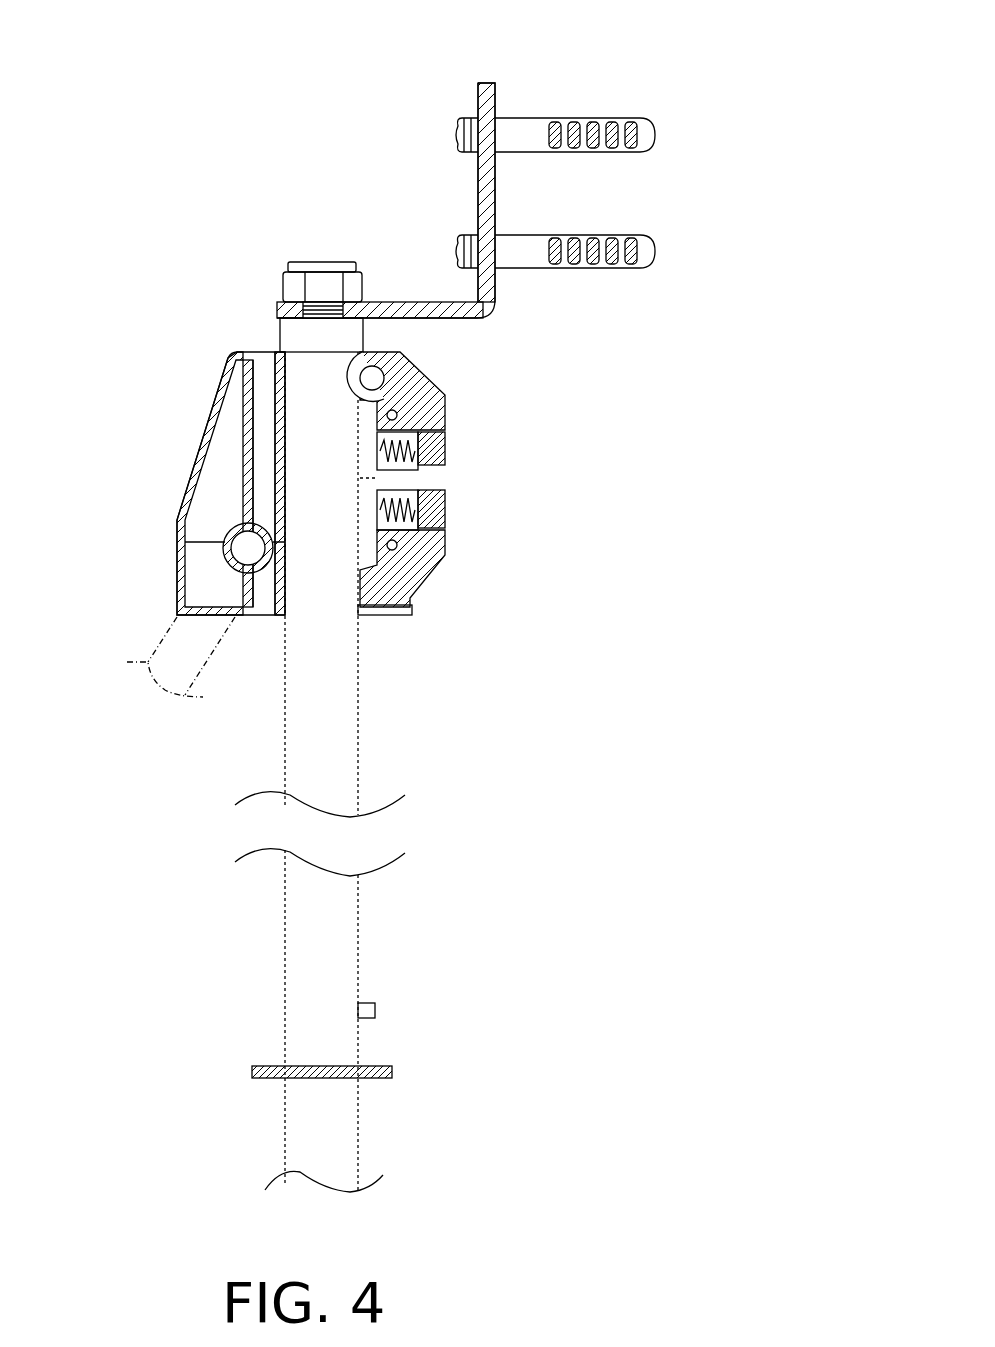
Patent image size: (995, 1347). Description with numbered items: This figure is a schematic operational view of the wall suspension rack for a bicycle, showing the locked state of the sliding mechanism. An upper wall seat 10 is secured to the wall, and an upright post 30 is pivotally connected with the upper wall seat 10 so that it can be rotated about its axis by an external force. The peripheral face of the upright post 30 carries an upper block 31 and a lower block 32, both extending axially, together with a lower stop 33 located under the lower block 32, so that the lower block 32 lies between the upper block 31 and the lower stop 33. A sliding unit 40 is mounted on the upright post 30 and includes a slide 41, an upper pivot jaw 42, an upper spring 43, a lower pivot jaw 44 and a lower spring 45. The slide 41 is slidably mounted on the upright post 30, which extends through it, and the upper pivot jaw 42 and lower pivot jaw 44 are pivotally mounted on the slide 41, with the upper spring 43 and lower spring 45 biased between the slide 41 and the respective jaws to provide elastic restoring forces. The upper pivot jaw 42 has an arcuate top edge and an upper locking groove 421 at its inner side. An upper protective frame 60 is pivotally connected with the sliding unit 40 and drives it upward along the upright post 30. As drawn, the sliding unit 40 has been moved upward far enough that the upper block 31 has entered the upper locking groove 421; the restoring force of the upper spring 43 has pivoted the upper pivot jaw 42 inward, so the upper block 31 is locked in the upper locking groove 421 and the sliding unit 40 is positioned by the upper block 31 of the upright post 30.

The upper wall seat 10 is at (490, 83).
The upright post 30 is at (293, 962).
The upper block 31 is at (385, 318).
The lower block 32 is at (376, 1012).
The lower stop 33 is at (392, 1075).
The sliding unit 40 is at (130, 463).
The slide 41 is at (205, 405).
The upper pivot jaw 42 is at (437, 385).
The upper locking groove 421 is at (410, 357).
The upper spring 43 is at (447, 455).
The lower pivot jaw 44 is at (445, 560).
The lower spring 45 is at (447, 506).
The upper protective frame 60 is at (170, 647).